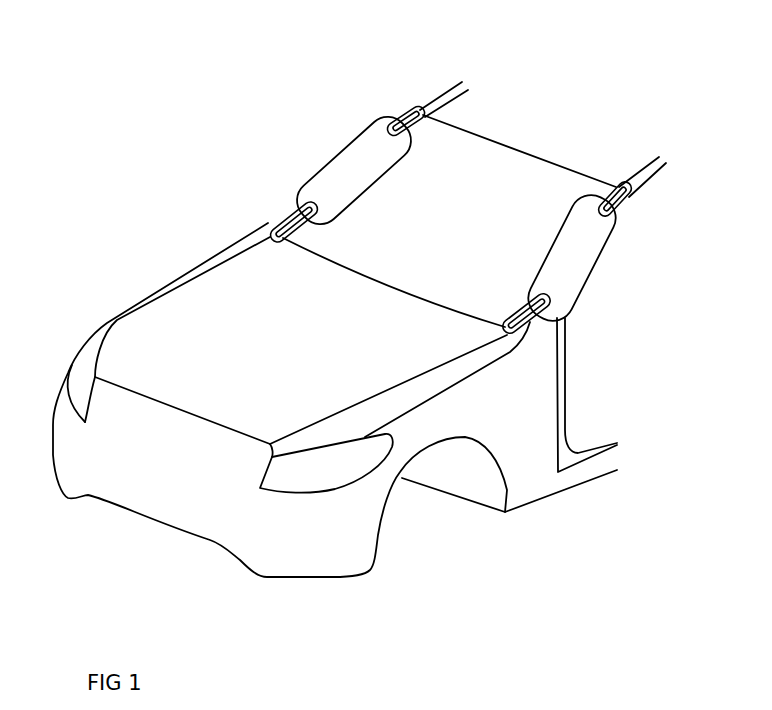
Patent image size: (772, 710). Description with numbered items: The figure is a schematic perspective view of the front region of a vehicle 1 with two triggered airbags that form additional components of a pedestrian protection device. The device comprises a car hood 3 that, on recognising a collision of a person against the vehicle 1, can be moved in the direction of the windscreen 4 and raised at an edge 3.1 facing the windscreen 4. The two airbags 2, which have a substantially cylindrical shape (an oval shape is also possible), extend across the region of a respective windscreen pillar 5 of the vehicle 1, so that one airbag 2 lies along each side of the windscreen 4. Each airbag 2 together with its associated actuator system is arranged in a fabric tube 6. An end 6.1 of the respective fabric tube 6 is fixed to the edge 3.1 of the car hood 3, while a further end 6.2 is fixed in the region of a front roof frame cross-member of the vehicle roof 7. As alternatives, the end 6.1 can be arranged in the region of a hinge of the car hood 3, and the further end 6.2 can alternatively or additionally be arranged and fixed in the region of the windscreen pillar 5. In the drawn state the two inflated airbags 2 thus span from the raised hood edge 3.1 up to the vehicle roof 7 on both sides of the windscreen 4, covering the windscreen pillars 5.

The vehicle 1 is at (262, 78).
The airbag 2 is at (377, 143).
The car hood 3 is at (128, 345).
The edge 3.1 is at (347, 270).
The windscreen 4 is at (474, 157).
The windscreen pillar 5 is at (290, 200).
The fabric tube 6 is at (484, 184).
The end 6.1 is at (275, 225).
The further end 6.2 is at (413, 103).
The vehicle roof 7 is at (566, 130).